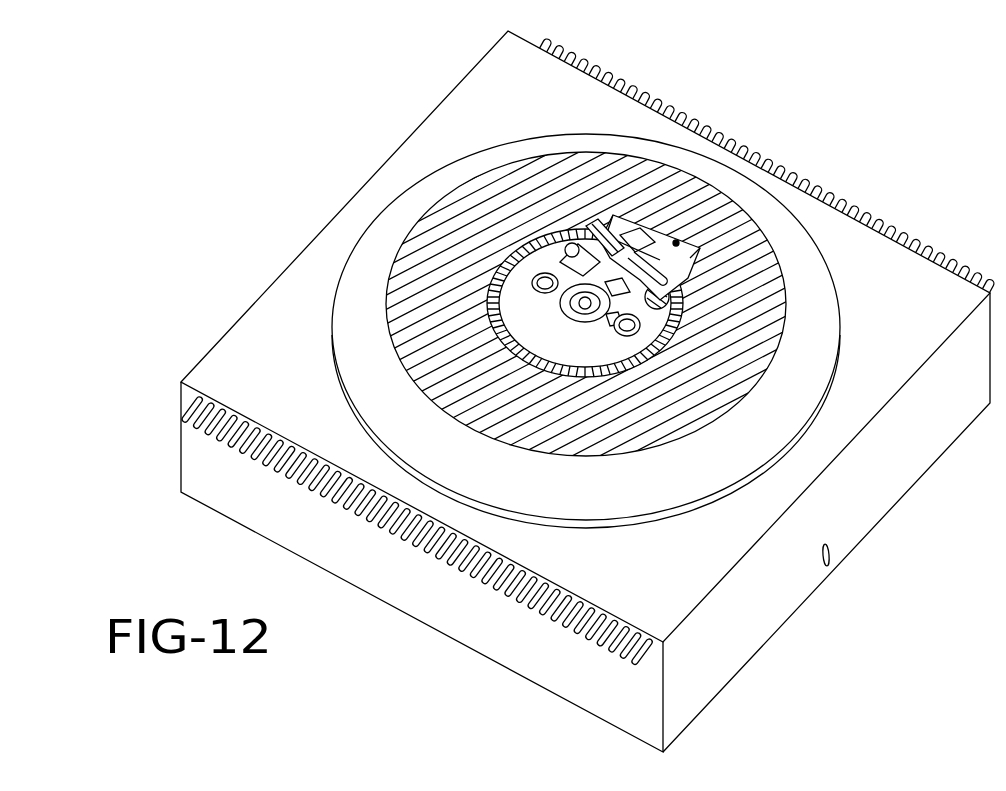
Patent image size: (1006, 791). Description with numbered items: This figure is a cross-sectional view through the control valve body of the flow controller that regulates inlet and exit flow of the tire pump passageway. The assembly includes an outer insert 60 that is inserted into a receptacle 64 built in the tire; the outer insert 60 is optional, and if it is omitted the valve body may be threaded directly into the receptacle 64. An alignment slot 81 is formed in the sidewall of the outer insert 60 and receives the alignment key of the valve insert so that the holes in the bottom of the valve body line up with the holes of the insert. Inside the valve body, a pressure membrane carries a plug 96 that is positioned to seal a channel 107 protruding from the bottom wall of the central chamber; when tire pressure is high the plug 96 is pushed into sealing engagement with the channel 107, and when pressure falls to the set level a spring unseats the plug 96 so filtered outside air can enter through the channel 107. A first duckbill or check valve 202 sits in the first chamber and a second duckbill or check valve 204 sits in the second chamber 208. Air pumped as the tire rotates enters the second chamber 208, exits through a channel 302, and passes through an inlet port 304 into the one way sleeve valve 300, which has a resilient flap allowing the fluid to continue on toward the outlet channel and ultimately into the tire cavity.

The outer insert 60 is at (578, 322).
The receptacle 64 is at (665, 405).
The alignment slot 81 is at (635, 240).
The plug 96 is at (583, 305).
The channel 107 is at (583, 303).
The first duckbill or check valve 202 is at (543, 282).
The second duckbill or check valve 204 is at (615, 320).
The second chamber 208 is at (630, 327).
The one way sleeve valve 300 is at (676, 243).
The channel 302 is at (640, 304).
The inlet port 304 is at (617, 287).